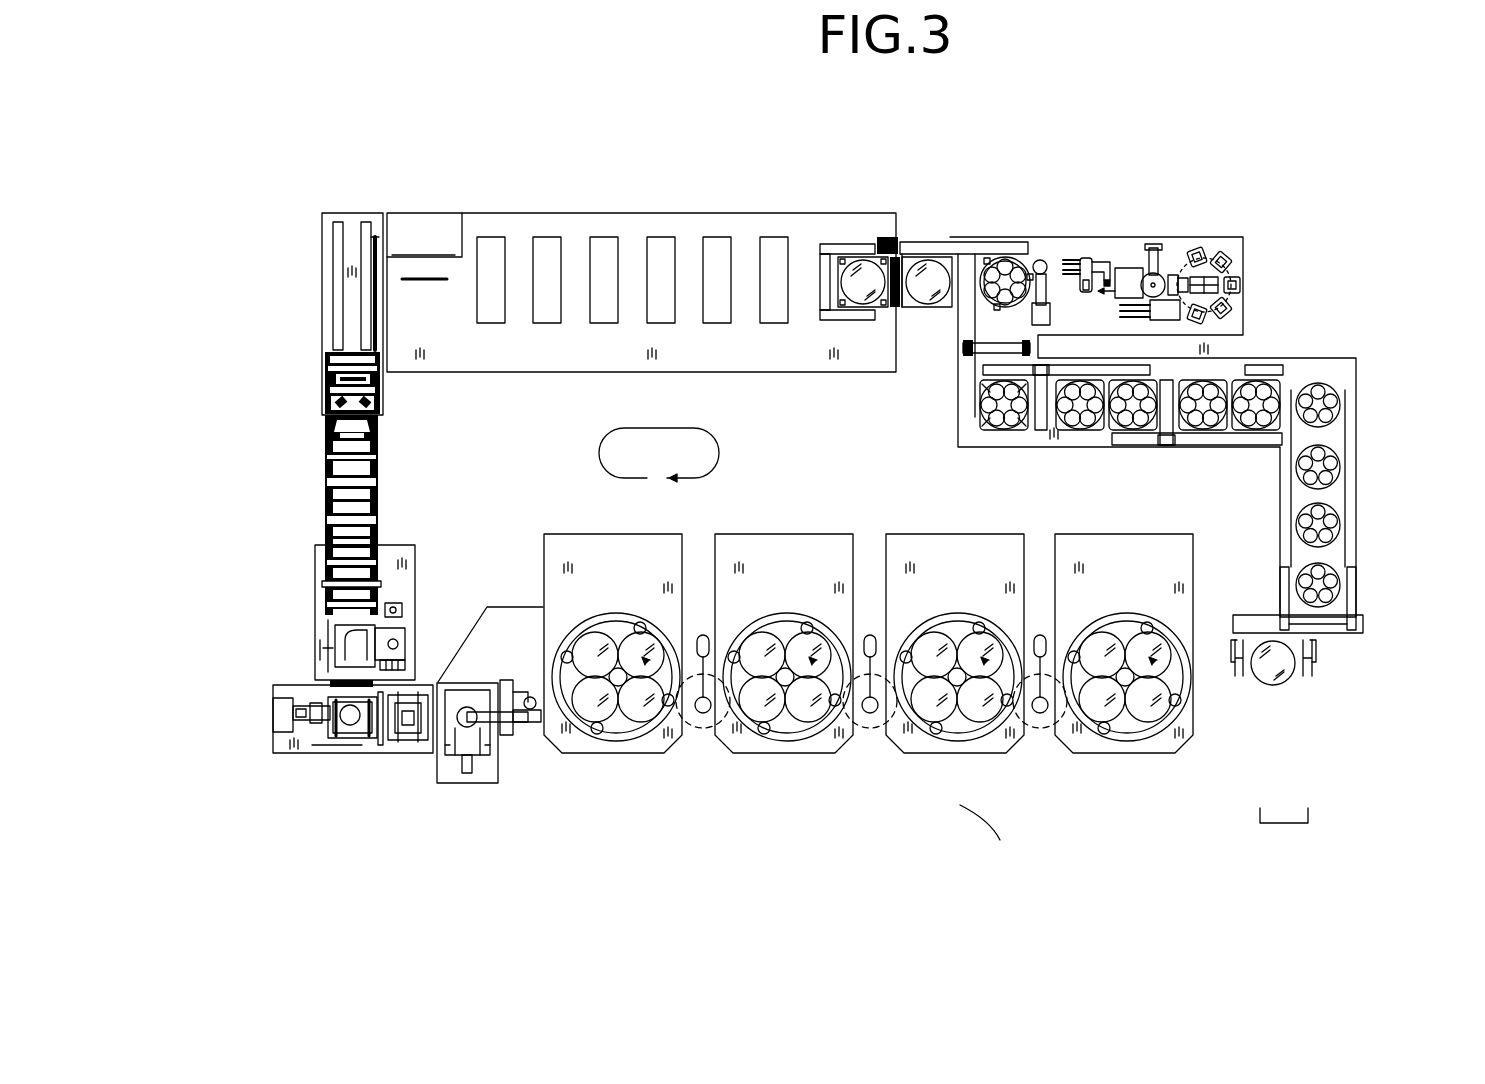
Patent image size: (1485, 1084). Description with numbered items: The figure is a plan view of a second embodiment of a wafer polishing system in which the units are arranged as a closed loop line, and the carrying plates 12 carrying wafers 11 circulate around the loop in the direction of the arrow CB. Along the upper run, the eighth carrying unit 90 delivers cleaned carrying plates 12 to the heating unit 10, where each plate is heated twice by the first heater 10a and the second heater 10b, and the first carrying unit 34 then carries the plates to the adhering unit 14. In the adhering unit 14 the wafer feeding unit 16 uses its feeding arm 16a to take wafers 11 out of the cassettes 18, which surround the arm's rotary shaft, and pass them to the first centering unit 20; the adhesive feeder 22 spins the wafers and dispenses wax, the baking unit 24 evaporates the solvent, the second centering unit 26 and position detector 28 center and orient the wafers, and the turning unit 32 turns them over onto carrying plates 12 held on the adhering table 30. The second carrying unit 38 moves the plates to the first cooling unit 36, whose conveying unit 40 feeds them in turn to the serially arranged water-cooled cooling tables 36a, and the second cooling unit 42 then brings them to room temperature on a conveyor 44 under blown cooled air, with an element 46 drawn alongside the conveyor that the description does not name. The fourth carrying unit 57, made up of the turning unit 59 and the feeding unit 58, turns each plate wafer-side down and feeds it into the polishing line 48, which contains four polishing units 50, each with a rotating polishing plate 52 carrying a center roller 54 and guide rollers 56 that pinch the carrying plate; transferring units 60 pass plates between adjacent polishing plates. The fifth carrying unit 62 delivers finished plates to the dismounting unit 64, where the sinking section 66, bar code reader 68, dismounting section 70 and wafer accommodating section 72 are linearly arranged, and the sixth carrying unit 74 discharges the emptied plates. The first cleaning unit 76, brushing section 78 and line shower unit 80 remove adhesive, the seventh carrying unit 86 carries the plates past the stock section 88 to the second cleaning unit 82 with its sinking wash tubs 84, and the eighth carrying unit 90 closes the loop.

The heating unit 10 is at (880, 238).
The first heater 10a is at (855, 256).
The second heater 10b is at (955, 257).
The wafer 11 is at (1000, 258).
The carrying plate 12 is at (400, 277).
The adhering unit 14 is at (1076, 242).
The wafer feeding unit 16 is at (1219, 240).
The feeding arm 16a is at (1236, 268).
The cassette 18 is at (1242, 282).
The first centering unit 20 is at (1202, 275).
The adhesive feeder 22 is at (1180, 272).
The baking unit 24 is at (1147, 272).
The second centering unit 26 is at (1125, 268).
The position detector 28 is at (1100, 266).
The adhering table 30 is at (1035, 258).
The turning unit 32 is at (1054, 258).
The first carrying unit 34 is at (896, 255).
The first cooling unit 36 is at (1090, 435).
The cooling table 36a is at (1030, 430).
The second carrying unit 38 is at (1000, 348).
The conveying unit 40 is at (995, 425).
The second cooling unit 42 is at (1356, 498).
The conveyor 44 is at (1347, 537).
The guide rail 46 is at (1335, 388).
The polishing line 48 is at (948, 798).
The polishing unit 50 is at (640, 748).
The polishing plate 52 is at (788, 708).
The center roller 54 is at (1125, 680).
The guide roller 56 is at (1182, 700).
The fourth carrying unit 57 is at (1284, 835).
The feeding unit 58 is at (1240, 677).
The turning unit 59 is at (1358, 602).
The transferring unit 60 is at (703, 714).
The fifth carrying unit 62 is at (527, 735).
The dismounting unit 64 is at (374, 758).
The sinking section 66 is at (470, 740).
The bar code reader 68 is at (410, 740).
The dismounting section 70 is at (343, 725).
The wafer accommodating section 72 is at (282, 722).
The sixth carrying unit 74 is at (330, 686).
The first cleaning unit 76 is at (320, 634).
The brushing section 78 is at (340, 593).
The line shower unit 80 is at (338, 552).
The second cleaning unit 82 is at (632, 224).
The sinking wash tub 84 is at (491, 245).
The seventh carrying unit 86 is at (338, 380).
The stock section 88 is at (416, 232).
The eighth carrying unit 90 is at (822, 268).
The arrow CB is at (718, 450).